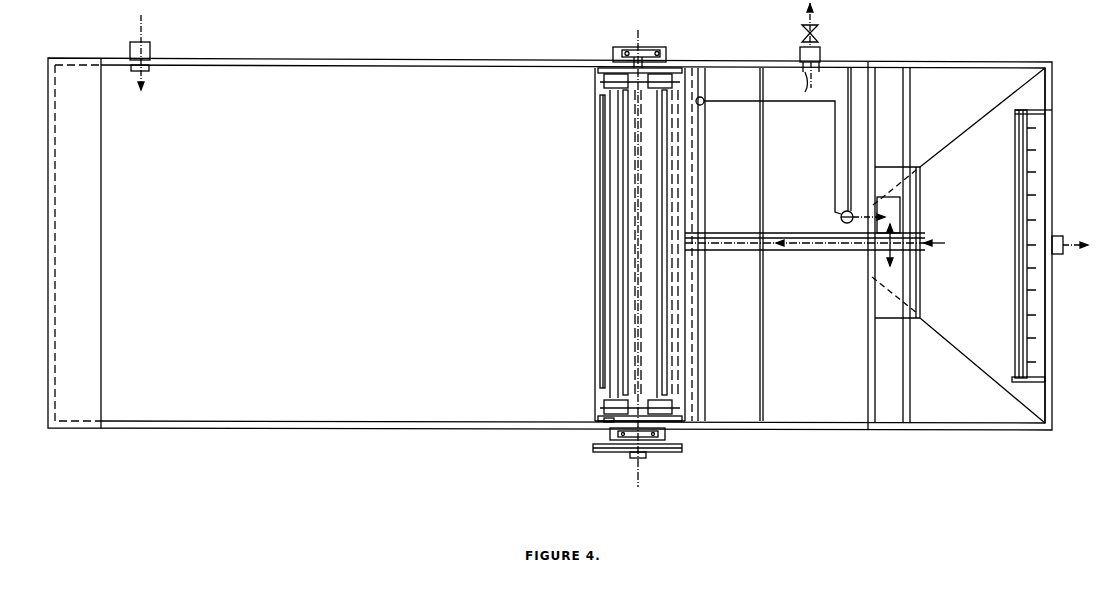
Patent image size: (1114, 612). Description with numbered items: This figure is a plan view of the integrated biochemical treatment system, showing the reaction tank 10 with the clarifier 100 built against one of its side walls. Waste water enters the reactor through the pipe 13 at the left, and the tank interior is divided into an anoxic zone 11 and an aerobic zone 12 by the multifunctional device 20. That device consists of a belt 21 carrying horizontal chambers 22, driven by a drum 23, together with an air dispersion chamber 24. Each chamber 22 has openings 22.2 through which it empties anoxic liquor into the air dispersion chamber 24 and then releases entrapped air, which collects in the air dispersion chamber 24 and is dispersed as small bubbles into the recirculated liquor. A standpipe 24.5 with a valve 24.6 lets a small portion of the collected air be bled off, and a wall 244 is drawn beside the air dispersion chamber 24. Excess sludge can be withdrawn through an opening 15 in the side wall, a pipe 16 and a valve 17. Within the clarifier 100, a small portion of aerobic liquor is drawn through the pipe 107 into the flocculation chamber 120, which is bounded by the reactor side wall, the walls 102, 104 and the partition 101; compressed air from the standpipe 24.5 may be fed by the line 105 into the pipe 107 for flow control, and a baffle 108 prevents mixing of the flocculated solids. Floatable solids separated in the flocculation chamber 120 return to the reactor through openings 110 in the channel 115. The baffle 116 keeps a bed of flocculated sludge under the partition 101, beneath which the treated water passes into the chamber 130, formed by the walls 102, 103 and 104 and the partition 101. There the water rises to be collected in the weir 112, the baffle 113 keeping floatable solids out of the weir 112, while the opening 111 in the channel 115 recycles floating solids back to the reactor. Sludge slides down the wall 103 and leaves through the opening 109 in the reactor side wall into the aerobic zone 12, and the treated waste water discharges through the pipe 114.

The reaction tank 10 is at (358, 20).
The anoxic zone 11 is at (337, 209).
The aerobic zone 12 is at (815, 143).
The pipe 13 is at (151, 52).
The opening 15 is at (812, 72).
The pipe 16 is at (820, 52).
The valve 17 is at (818, 36).
The multifunctional device 20 is at (648, 20).
The belt 21 is at (602, 86).
The horizontal chambers 22 is at (597, 302).
The openings 22.2 is at (600, 278).
The drum 23 is at (606, 423).
The air dispersion chamber 24 is at (739, 244).
The standpipe 24.5 is at (700, 106).
The valve 24.6 is at (704, 99).
The wall 244 is at (706, 150).
The clarifier 100 is at (970, 20).
The partition 101 is at (908, 132).
The wall 102 is at (964, 424).
The wall 103 is at (1055, 112).
The wall 104 is at (984, 70).
The line 105 is at (810, 104).
The pipe 107 is at (841, 218).
The baffle 108 is at (895, 207).
The opening 109 is at (866, 268).
The openings 110 is at (895, 258).
The opening 111 is at (938, 235).
The weir 112 is at (1028, 142).
The baffle 113 is at (1014, 158).
The pipe 114 is at (1058, 255).
The channel 115 is at (812, 252).
The baffle 116 is at (921, 302).
The flocculation chamber 120 is at (893, 363).
The chamber 130 is at (971, 266).